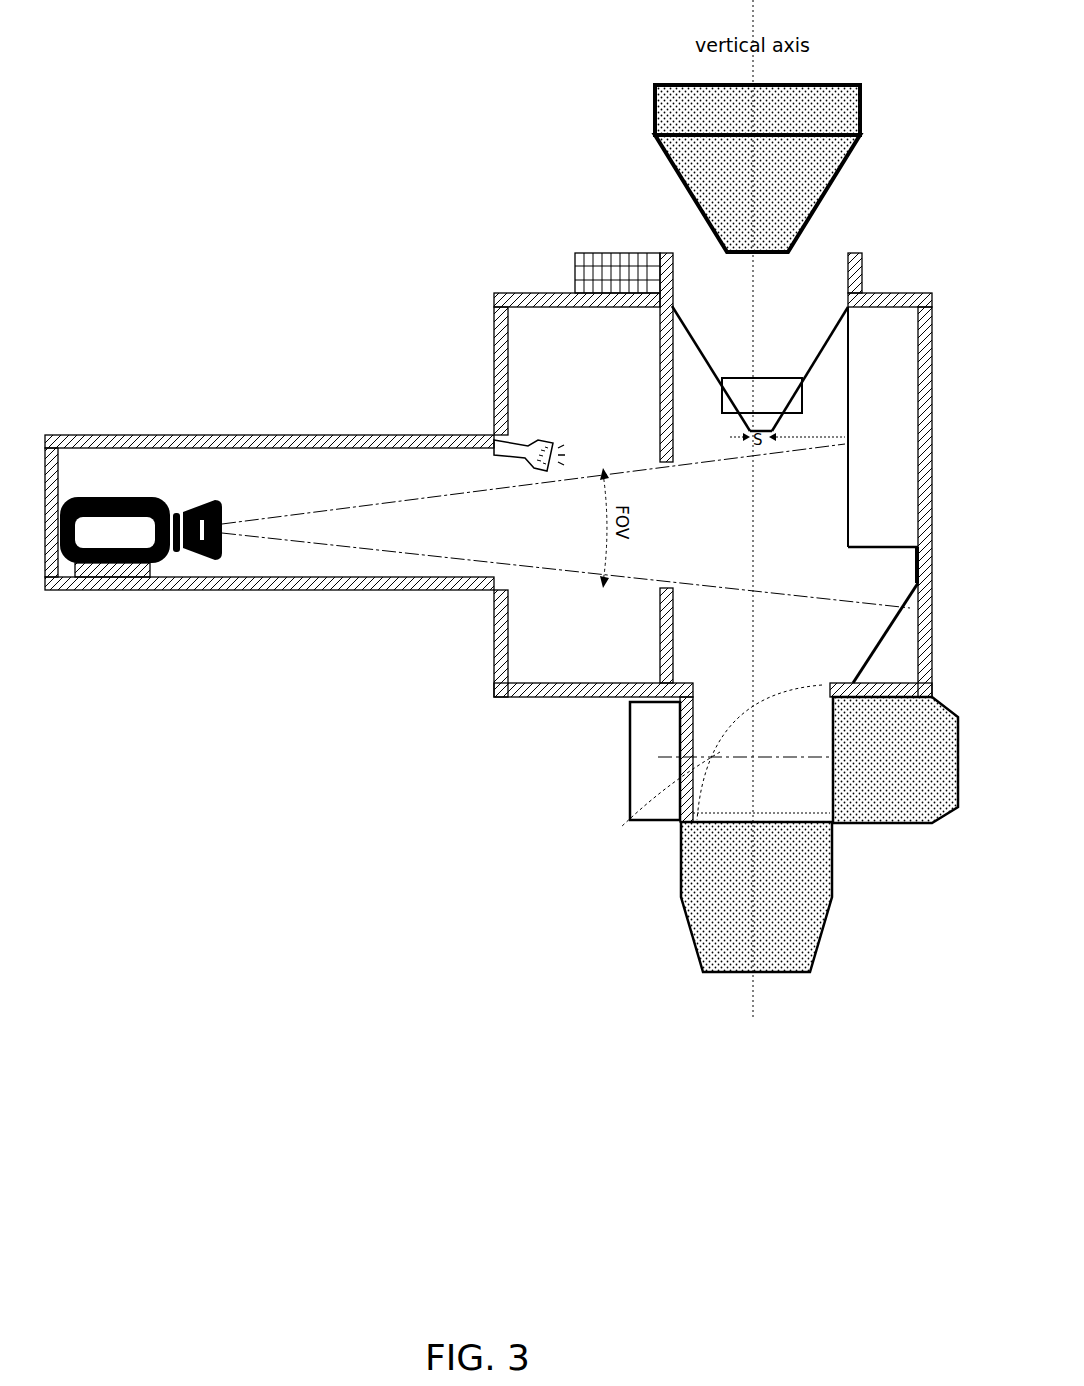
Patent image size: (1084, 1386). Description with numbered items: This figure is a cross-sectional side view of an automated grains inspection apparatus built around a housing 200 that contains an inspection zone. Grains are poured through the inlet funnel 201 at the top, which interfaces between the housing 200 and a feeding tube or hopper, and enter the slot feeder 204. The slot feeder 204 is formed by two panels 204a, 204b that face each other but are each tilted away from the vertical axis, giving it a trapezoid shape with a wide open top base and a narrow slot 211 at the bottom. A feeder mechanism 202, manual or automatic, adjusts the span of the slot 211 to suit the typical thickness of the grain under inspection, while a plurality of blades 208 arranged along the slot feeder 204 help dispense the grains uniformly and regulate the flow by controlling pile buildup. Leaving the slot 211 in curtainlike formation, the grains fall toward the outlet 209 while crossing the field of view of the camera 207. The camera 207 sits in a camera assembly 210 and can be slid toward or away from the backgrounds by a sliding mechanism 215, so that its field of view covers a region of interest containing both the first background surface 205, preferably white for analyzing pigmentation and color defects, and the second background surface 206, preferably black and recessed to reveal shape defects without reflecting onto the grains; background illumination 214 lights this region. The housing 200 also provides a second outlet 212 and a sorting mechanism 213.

The housing 200 is at (593, 697).
The inlet funnel 201 is at (657, 140).
The feeder mechanism 202 is at (620, 253).
The slot feeder 204 is at (740, 307).
The panel 204a is at (690, 340).
The panel 204b is at (822, 340).
The first background surface 205 is at (848, 472).
The second background surface 206 is at (917, 555).
The camera 207 is at (110, 497).
The blades 208 is at (743, 393).
The outlet 209 is at (680, 875).
The camera assembly 210 is at (290, 435).
The slot 211 is at (815, 423).
The second outlet 212 is at (868, 824).
The sorting mechanism 213 is at (630, 817).
The background illumination 214 is at (492, 437).
The sliding mechanism 215 is at (126, 577).